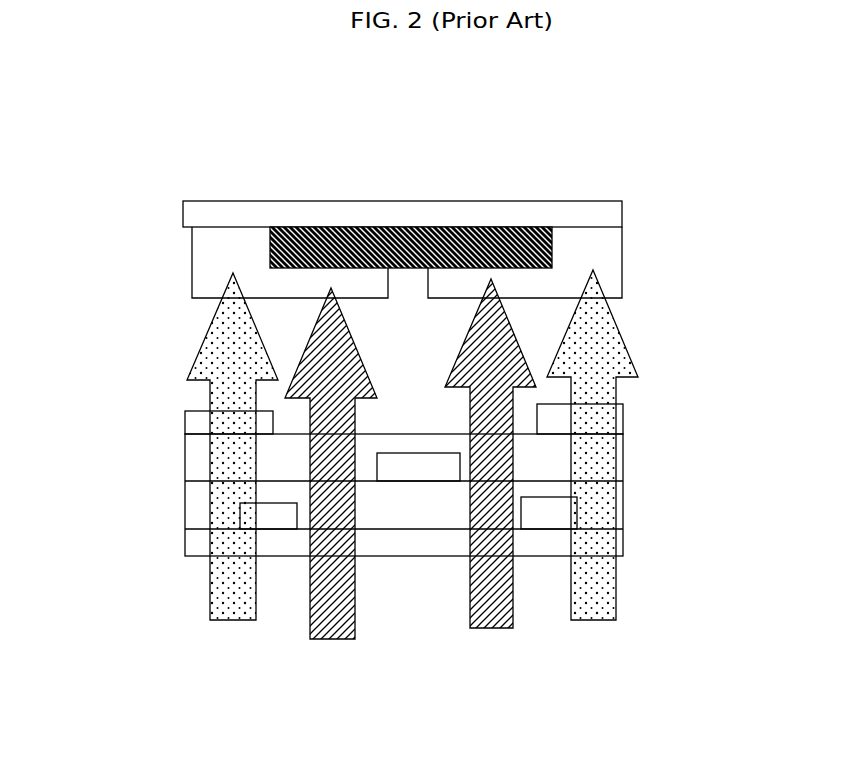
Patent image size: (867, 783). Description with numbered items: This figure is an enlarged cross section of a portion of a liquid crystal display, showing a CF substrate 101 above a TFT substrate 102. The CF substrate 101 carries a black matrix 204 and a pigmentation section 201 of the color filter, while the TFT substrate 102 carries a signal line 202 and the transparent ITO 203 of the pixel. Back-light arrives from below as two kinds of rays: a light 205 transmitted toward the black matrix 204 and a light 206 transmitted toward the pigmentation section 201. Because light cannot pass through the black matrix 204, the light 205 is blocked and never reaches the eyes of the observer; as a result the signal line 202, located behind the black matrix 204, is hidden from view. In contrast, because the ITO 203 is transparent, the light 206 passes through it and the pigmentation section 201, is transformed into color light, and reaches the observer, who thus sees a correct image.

The CF substrate 101 is at (412, 211).
The TFT substrate 102 is at (413, 562).
The pigmentation section of color filter 201 is at (213, 260).
The signal line 202 is at (420, 465).
The ITO of the pixel 203 is at (197, 423).
The black matrix 204 is at (388, 226).
The light of the back-lighting transmitted to the black matrix 205 is at (313, 638).
The light of the back-lighting transmitted to the pigmentation section 206 is at (238, 617).